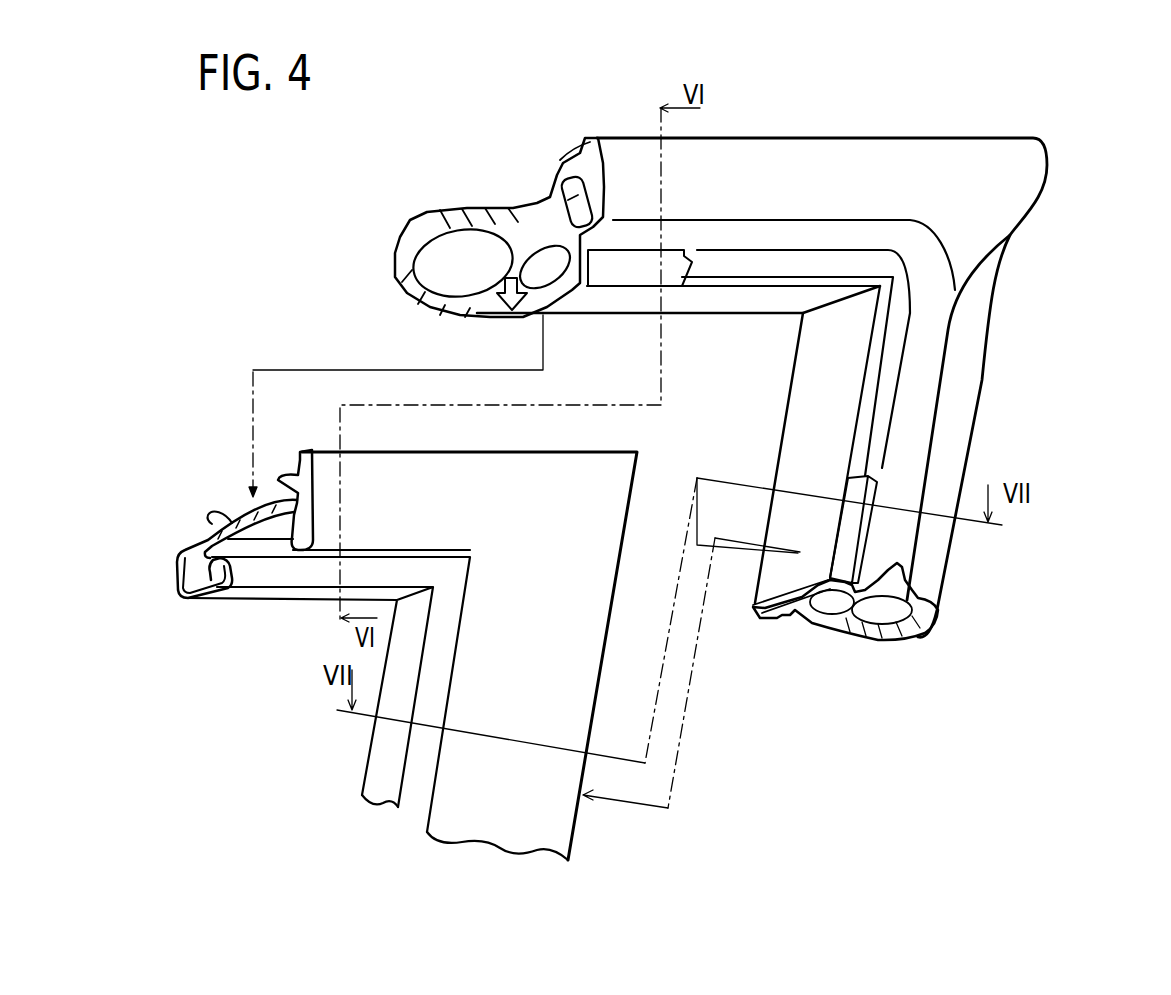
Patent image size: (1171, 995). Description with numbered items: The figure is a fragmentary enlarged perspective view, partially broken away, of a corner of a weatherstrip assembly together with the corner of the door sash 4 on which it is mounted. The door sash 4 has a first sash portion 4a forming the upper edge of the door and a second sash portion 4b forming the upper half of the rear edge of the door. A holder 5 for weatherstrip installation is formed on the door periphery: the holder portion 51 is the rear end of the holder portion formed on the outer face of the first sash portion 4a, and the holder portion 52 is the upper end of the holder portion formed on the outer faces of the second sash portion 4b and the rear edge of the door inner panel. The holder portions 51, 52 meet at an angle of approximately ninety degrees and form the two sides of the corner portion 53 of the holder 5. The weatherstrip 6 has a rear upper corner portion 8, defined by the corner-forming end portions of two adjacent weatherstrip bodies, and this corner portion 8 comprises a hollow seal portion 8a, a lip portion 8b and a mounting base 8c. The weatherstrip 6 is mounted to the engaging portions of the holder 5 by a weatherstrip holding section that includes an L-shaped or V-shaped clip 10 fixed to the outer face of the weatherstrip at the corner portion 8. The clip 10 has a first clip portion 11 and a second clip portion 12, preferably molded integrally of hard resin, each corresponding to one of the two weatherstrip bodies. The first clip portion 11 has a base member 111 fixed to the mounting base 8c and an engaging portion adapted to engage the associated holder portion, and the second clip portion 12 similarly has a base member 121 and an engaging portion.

The door sash 4 is at (433, 657).
The first sash portion 4a is at (460, 462).
The second sash portion 4b is at (482, 820).
The holder 5 is at (231, 492).
The holder portion 51 is at (305, 450).
The holder portion 52 is at (577, 823).
The corner portion of the holder 53 is at (657, 444).
The weatherstrip 6 is at (1013, 342).
The rear upper corner portion of the weatherstrip 8 is at (955, 152).
The hollow seal portion 8a is at (400, 262).
The lip portion 8b is at (583, 153).
The mounting base 8c is at (520, 317).
The clip 10 is at (693, 426).
The first clip portion 11 is at (773, 303).
The second clip portion 12 is at (797, 390).
The base member 111 is at (610, 253).
The base member 121 is at (860, 550).